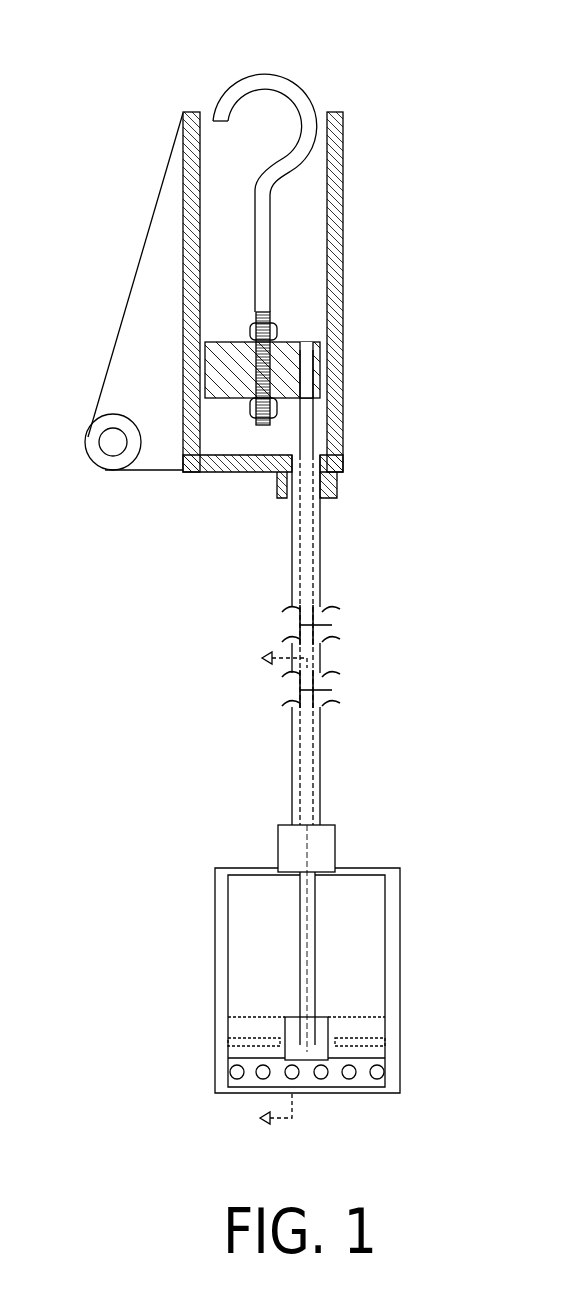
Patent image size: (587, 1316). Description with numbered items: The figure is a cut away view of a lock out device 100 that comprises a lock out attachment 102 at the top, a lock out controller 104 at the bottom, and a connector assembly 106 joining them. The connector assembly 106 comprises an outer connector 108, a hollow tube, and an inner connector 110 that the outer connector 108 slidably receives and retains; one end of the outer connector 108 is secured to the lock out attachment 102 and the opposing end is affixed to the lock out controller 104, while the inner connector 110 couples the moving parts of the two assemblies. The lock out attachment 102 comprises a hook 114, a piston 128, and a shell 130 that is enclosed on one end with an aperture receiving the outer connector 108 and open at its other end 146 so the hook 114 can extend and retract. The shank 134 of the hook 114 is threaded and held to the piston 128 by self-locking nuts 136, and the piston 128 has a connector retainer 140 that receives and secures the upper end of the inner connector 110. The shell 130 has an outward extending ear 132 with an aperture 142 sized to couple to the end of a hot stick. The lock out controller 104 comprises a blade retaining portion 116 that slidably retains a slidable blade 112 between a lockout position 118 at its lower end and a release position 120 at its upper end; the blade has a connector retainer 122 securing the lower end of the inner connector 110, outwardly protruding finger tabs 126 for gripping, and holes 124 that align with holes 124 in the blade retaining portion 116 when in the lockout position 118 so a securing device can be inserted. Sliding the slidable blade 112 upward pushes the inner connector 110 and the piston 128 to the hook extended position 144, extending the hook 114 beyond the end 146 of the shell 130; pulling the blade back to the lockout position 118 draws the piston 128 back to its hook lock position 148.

The lock out device 100 is at (426, 88).
The lock out attachment 102 is at (397, 216).
The lock out controller 104 is at (428, 972).
The connector assembly 106 is at (402, 678).
The outer connector 108 is at (320, 525).
The inner connector 110 is at (308, 418).
The slidable blade 112 is at (368, 1027).
The hook 114 is at (267, 73).
The blade retaining portion 116 is at (250, 953).
The lockout position 118 is at (169, 1072).
The release position 120 is at (187, 895).
The connector retainer 122 is at (326, 1028).
The holes 124 is at (322, 1078).
The finger tabs 126 is at (243, 1038).
The piston 128 is at (220, 342).
The shell 130 is at (343, 256).
The ear 132 is at (127, 358).
The shank 134 is at (267, 426).
The self-locking nuts 136 is at (250, 328).
The connector retainer 140 is at (308, 358).
The aperture 142 is at (113, 442).
The hook extended position 144 is at (362, 162).
The end of the shell 146 is at (167, 108).
The hook lock position 148 is at (412, 368).